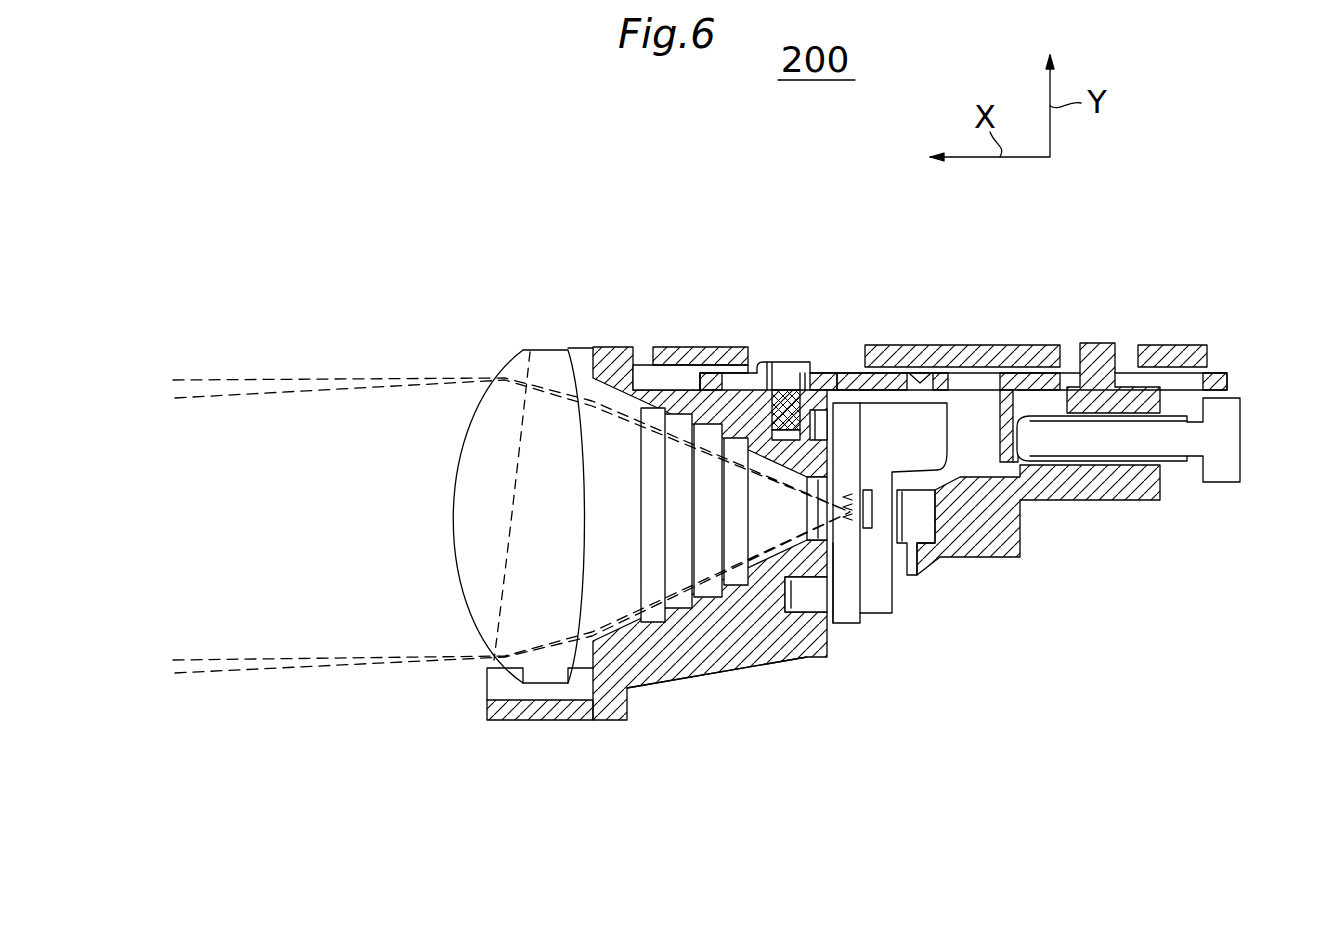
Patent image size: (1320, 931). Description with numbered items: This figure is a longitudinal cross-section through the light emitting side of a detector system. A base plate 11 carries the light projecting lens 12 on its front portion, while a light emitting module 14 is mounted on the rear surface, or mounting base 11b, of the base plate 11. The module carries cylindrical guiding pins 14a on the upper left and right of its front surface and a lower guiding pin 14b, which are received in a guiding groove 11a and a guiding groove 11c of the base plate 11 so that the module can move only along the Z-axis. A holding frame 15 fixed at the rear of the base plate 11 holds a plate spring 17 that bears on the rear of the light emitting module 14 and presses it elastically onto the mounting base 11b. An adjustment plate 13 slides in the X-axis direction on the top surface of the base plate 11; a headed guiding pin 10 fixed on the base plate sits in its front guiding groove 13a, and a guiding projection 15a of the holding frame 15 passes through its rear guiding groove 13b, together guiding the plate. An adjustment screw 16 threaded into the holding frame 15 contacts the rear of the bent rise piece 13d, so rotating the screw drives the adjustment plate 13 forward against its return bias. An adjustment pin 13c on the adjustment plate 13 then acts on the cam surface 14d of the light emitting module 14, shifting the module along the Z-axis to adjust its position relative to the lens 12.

The guiding pin 10 is at (515, 501).
The base plate 11 is at (673, 655).
The guiding groove 11a is at (768, 370).
The mounting base 11b is at (833, 361).
The guiding groove 11c is at (743, 655).
The light projecting lens 12 is at (537, 580).
The adjustment plate 13 is at (853, 358).
The guiding groove 13a is at (722, 347).
The guiding groove 13b is at (1183, 345).
The adjustment pin 13c is at (916, 376).
The rise piece 13d is at (1025, 392).
The light emitting module 14 is at (881, 614).
The guiding pin 14a is at (813, 362).
The guiding pin 14b is at (803, 603).
The cam surface 14d is at (835, 560).
The holding frame 15 is at (980, 530).
The guiding projection 15a is at (1110, 345).
The adjustment screw 16 is at (1047, 452).
The plate spring 17 is at (917, 533).